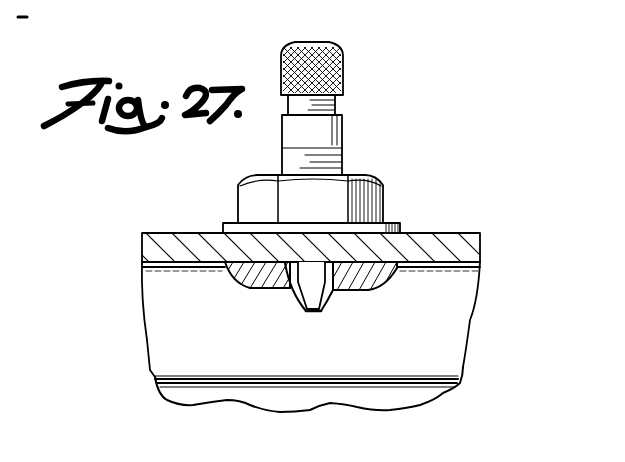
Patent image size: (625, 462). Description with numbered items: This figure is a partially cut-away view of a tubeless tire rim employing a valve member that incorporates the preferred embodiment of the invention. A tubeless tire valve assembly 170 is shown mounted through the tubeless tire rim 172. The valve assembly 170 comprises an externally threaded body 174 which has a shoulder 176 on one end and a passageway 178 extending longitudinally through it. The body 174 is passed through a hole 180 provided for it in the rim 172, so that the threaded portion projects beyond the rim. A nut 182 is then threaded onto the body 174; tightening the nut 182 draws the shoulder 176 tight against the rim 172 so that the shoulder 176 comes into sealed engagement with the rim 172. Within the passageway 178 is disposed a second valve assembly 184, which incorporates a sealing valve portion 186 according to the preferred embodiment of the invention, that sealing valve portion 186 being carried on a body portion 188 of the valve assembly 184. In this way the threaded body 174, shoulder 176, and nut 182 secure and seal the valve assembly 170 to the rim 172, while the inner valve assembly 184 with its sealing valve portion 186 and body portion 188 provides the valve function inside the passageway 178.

The tubeless tire valve assembly 170 is at (357, 97).
The tubeless tire rim 172 is at (152, 242).
The externally threaded body 174 is at (305, 152).
The shoulder 176 is at (378, 264).
The passageway 178 is at (268, 290).
The hole 180 is at (272, 218).
The nut 182 is at (253, 175).
The valve assembly 184 is at (338, 299).
The sealing valve portion 186 is at (302, 315).
The body portion 188 is at (368, 288).